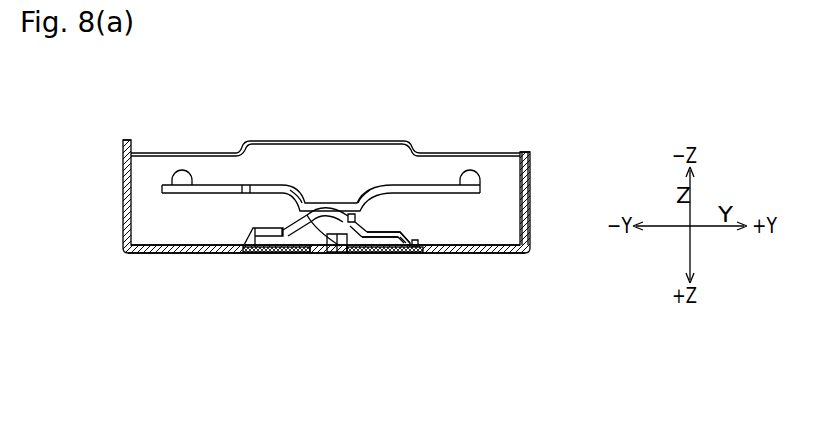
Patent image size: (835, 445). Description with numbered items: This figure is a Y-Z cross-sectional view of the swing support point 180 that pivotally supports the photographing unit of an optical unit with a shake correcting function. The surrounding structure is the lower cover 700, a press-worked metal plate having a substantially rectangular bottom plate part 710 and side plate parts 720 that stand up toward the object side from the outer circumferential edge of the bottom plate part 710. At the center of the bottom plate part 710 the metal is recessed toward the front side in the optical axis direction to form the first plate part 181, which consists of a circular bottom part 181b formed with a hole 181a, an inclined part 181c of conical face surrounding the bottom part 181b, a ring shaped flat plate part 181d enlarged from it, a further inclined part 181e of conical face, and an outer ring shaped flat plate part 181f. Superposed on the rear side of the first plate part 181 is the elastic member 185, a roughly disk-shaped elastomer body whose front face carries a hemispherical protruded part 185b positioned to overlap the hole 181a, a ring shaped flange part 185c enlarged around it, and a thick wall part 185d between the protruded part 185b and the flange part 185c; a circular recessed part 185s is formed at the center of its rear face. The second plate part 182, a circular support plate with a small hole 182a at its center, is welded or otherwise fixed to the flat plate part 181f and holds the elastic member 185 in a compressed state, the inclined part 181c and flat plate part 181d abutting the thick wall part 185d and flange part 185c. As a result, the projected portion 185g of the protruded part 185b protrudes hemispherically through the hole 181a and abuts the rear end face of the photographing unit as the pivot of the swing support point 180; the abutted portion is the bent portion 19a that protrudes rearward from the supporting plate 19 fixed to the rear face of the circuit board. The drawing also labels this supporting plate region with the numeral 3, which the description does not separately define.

The circuit board 3 is at (321, 135).
The supporting plate 19 is at (321, 135).
The bent portion 19a is at (318, 212).
The swing support point 180 is at (362, 221).
The first plate part 181 is at (399, 200).
The hole 181a is at (300, 224).
The circular bottom part 181b is at (356, 224).
The inclined part 181c is at (388, 236).
The ring shaped flat plate part 181d is at (400, 243).
The inclined part 181e is at (406, 246).
The ring shaped flat plate part 181f is at (418, 246).
The second plate part 182 is at (429, 292).
The small hole 182a is at (338, 252).
The elastic member 185 is at (372, 290).
The protruded part 185b is at (293, 250).
The circular recessed part 185s is at (323, 250).
The thick wall part 185d is at (350, 250).
The flange part 185c is at (374, 243).
The projected portion 185g is at (348, 215).
The lower cover 700 is at (329, 225).
The bottom plate part 710 is at (165, 254).
The side plate parts 720 is at (124, 186).